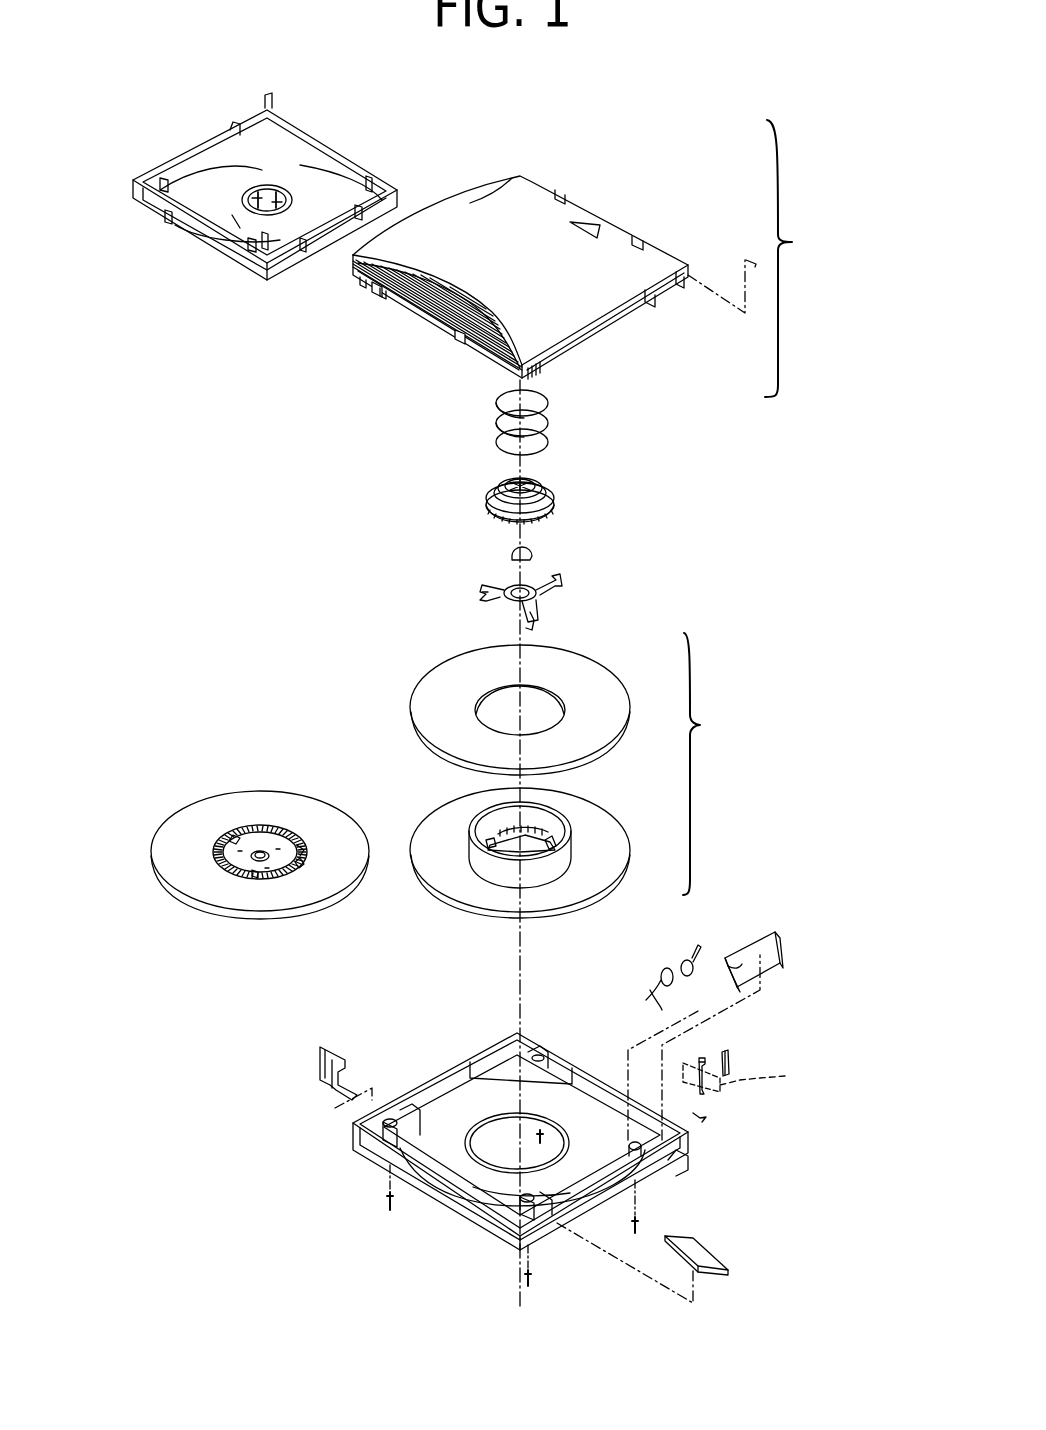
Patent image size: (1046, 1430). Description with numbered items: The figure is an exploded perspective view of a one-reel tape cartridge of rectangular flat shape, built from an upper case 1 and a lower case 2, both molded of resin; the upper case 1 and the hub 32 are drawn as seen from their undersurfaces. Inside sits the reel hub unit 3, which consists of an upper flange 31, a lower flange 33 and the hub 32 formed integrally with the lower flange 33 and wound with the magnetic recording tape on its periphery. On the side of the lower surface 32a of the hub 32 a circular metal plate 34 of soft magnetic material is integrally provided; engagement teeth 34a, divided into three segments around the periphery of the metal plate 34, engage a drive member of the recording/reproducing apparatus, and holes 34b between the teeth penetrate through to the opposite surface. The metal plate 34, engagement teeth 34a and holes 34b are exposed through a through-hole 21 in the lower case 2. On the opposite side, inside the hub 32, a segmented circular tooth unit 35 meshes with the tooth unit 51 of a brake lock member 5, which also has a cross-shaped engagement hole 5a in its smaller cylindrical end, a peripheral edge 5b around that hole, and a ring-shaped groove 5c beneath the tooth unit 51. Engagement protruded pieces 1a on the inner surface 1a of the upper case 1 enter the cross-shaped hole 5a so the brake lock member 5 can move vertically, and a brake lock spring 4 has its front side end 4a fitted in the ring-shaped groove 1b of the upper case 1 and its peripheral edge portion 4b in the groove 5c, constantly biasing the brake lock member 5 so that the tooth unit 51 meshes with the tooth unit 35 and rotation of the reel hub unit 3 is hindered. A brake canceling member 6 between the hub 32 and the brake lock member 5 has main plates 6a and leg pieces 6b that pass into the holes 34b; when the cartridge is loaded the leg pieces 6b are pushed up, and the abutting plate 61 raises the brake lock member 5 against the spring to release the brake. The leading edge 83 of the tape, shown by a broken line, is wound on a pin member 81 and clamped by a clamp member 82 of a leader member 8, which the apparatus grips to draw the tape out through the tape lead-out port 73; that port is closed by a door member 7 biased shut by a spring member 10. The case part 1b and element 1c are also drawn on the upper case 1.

The upper case 1 is at (590, 258).
The engagement protruded pieces / inner surface 1a is at (318, 160).
The ring-shaped groove 1b is at (240, 210).
The center opening 1c is at (270, 205).
The lower case 2 is at (527, 1168).
The through-hole 21 is at (488, 1145).
The reel hub unit 3 is at (441, 817).
The upper flange 31 is at (440, 690).
The hub 32 is at (475, 852).
The lower surface 32a is at (315, 844).
The lower flange 33 is at (395, 882).
The metal plate 34 is at (220, 856).
The engagement teeth 34a is at (221, 830).
The holes 34b is at (292, 842).
The tooth unit 35 is at (540, 835).
The brake lock spring 4 is at (586, 419).
The front side end 4a is at (545, 398).
The peripheral edge portion 4b is at (545, 452).
The brake lock member 5 is at (526, 502).
The cross-shaped engagement hole 5a is at (545, 487).
The peripheral edge 5b is at (505, 485).
The ring-shaped groove 5c is at (495, 498).
The tooth unit 51 is at (545, 516).
The brake canceling member 6 is at (521, 593).
The main plates 6a is at (552, 582).
The leg pieces 6b is at (525, 618).
The abutting plate 61 is at (512, 554).
The door member 7 is at (768, 945).
The tape lead-out port 73 is at (680, 1160).
The leader member 8 is at (753, 1070).
The pin member 81 is at (705, 1060).
The clamp member 82 is at (730, 1060).
The leading edge 83 is at (753, 1077).
The spring member 10 is at (662, 965).